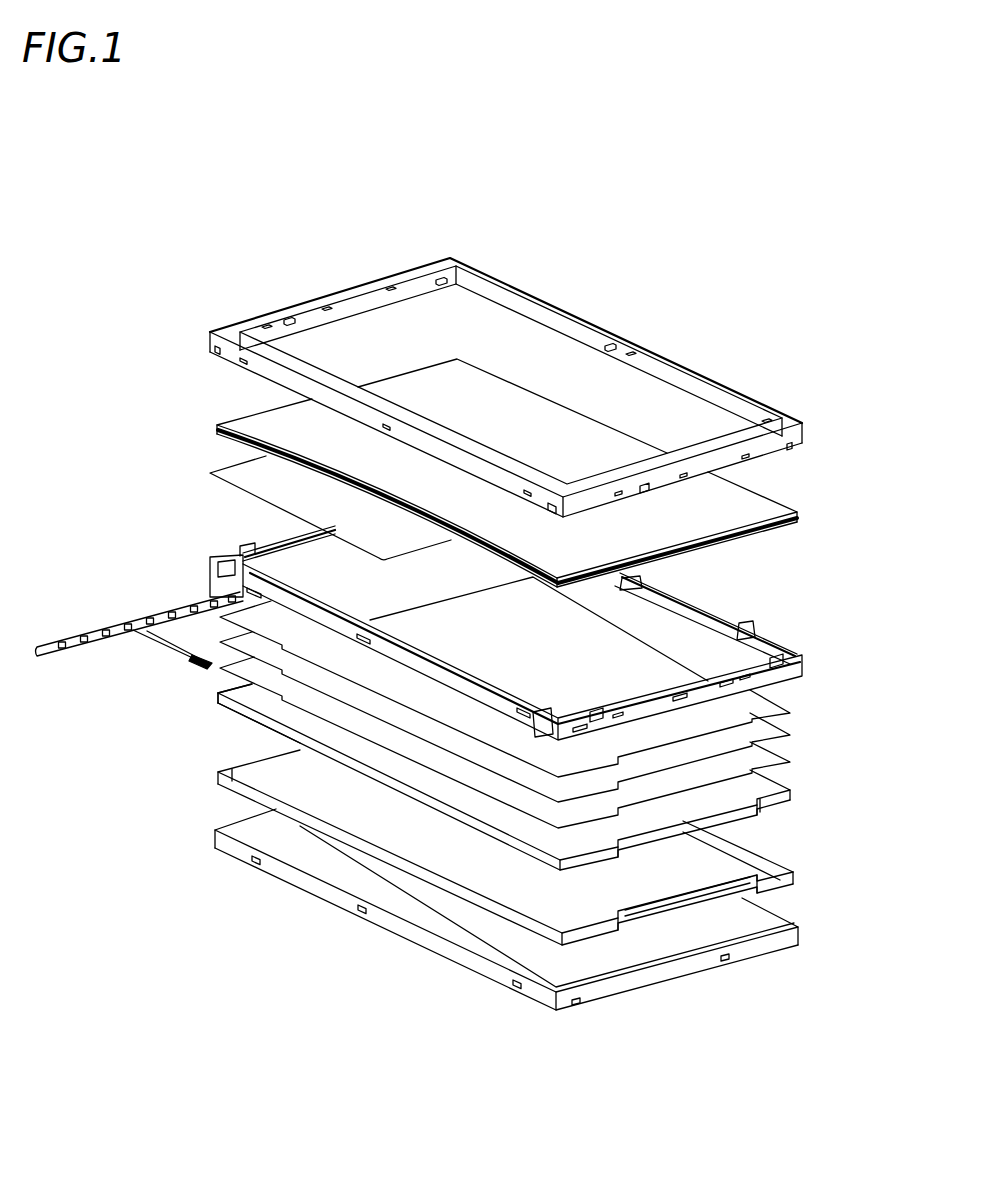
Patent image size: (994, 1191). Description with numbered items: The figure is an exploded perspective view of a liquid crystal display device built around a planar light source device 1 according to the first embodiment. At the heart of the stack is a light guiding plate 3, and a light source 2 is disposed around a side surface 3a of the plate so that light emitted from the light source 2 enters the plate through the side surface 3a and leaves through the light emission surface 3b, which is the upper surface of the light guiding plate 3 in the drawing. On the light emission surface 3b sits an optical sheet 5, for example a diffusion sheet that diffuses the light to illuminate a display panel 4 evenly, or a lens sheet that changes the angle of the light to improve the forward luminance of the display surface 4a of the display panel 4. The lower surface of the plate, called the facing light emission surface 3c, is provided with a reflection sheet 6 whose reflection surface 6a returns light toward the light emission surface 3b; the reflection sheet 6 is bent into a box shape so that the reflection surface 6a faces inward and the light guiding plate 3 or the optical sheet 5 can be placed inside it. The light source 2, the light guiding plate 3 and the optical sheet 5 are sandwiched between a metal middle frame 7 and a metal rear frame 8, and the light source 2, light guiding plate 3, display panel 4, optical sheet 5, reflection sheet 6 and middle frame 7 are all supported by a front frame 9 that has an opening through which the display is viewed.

The planar light source device 1 is at (573, 298).
The light source 2 is at (123, 624).
The light guiding plate 3 is at (459, 773).
The side surface 3a is at (222, 697).
The light emission surface 3b is at (243, 736).
The facing light emission surface 3c is at (218, 718).
The display panel 4 is at (457, 442).
The display surface 4a is at (557, 425).
The optical sheet 5 is at (800, 703).
The reflection sheet 6 is at (523, 847).
The reflection surface 6a is at (715, 857).
The middle frame 7 is at (763, 637).
The rear frame 8 is at (313, 895).
The front frame 9 is at (262, 304).